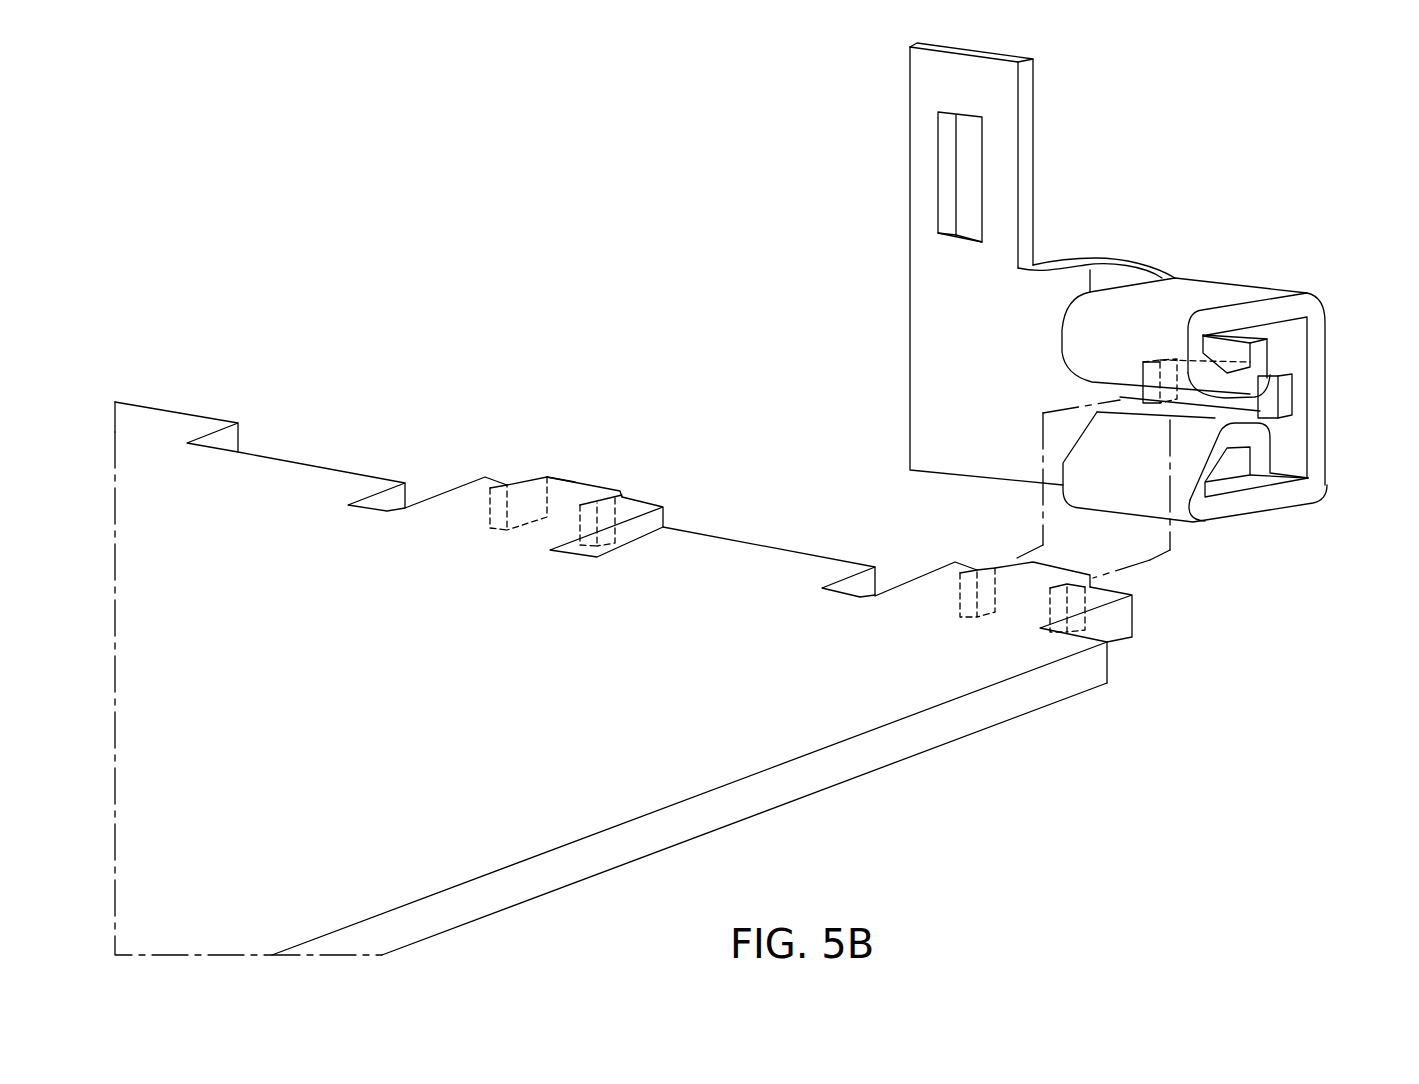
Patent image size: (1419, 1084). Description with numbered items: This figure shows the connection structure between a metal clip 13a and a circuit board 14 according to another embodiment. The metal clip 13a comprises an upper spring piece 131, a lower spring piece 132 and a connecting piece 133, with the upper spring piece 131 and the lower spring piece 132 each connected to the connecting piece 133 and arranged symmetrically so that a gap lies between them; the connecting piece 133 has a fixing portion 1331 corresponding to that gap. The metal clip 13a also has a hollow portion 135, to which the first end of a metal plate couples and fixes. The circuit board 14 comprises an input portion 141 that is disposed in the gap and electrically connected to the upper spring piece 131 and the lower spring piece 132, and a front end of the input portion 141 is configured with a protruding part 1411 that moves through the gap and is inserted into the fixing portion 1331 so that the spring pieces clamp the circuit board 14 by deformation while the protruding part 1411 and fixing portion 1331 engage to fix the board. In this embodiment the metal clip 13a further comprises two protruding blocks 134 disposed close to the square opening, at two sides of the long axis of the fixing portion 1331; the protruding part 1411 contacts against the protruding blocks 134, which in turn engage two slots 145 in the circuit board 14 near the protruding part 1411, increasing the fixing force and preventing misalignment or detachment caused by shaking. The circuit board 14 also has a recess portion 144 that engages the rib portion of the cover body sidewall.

The circuit board 14 is at (323, 482).
The input portion 141 is at (445, 505).
The protruding part 1411 is at (570, 486).
The slots 145 is at (505, 485).
The recess portion 144 is at (655, 527).
The metal clip 13a is at (912, 279).
The hollow portion 135 is at (970, 170).
The protruding blocks 134 is at (1160, 362).
The upper spring piece 131 is at (1237, 316).
The fixing portion 1331 is at (1272, 378).
The connecting piece 133 is at (1292, 440).
The lower spring piece 132 is at (1238, 503).